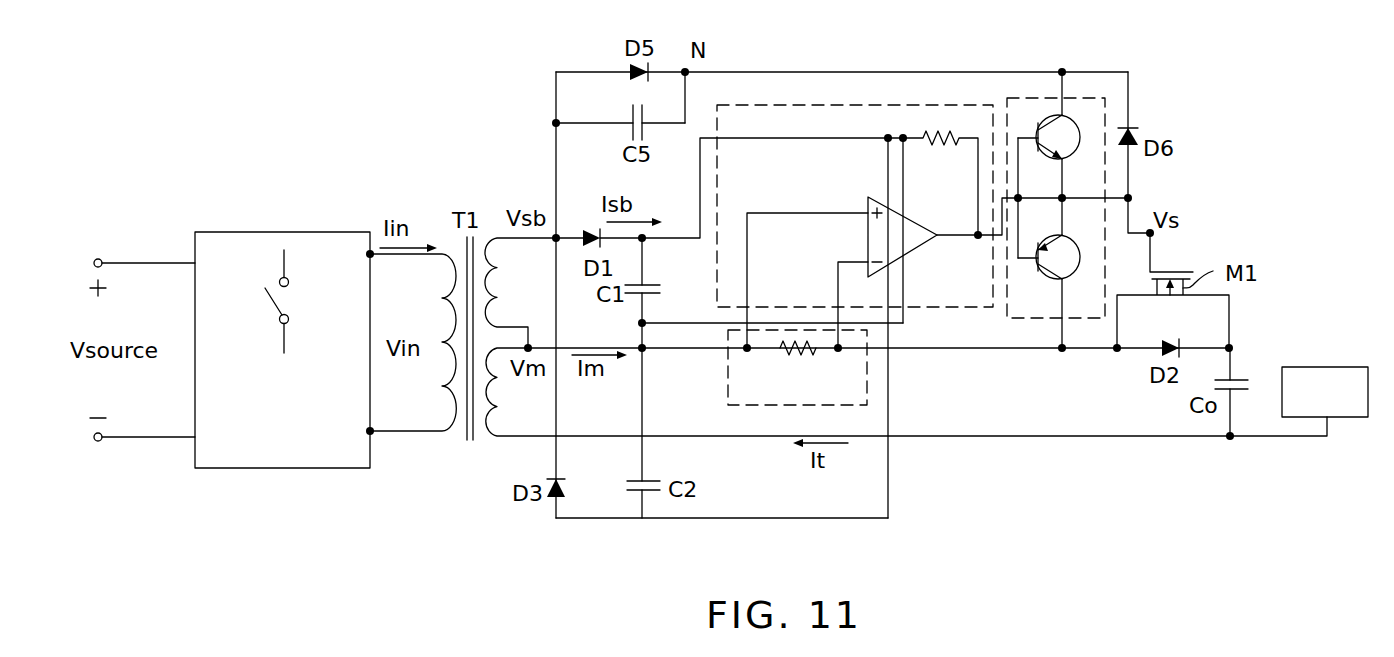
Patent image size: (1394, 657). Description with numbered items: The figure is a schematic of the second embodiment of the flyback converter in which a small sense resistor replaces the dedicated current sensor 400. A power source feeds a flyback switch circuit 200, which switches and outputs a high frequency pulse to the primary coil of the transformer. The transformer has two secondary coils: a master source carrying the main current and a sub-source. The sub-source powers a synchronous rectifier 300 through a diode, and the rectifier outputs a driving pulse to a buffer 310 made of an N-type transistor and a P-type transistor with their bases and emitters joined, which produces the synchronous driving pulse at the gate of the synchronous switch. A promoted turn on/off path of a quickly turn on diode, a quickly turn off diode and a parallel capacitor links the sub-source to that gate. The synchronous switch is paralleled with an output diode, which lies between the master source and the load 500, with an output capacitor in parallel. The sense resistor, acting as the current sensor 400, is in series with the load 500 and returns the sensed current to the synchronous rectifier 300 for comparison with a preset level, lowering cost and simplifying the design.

The flyback switch circuit 200 is at (258, 244).
The synchronous rectifier 300 is at (885, 105).
The buffer 310 is at (1080, 99).
The current sensor 400 is at (847, 396).
The load 500 is at (1358, 373).